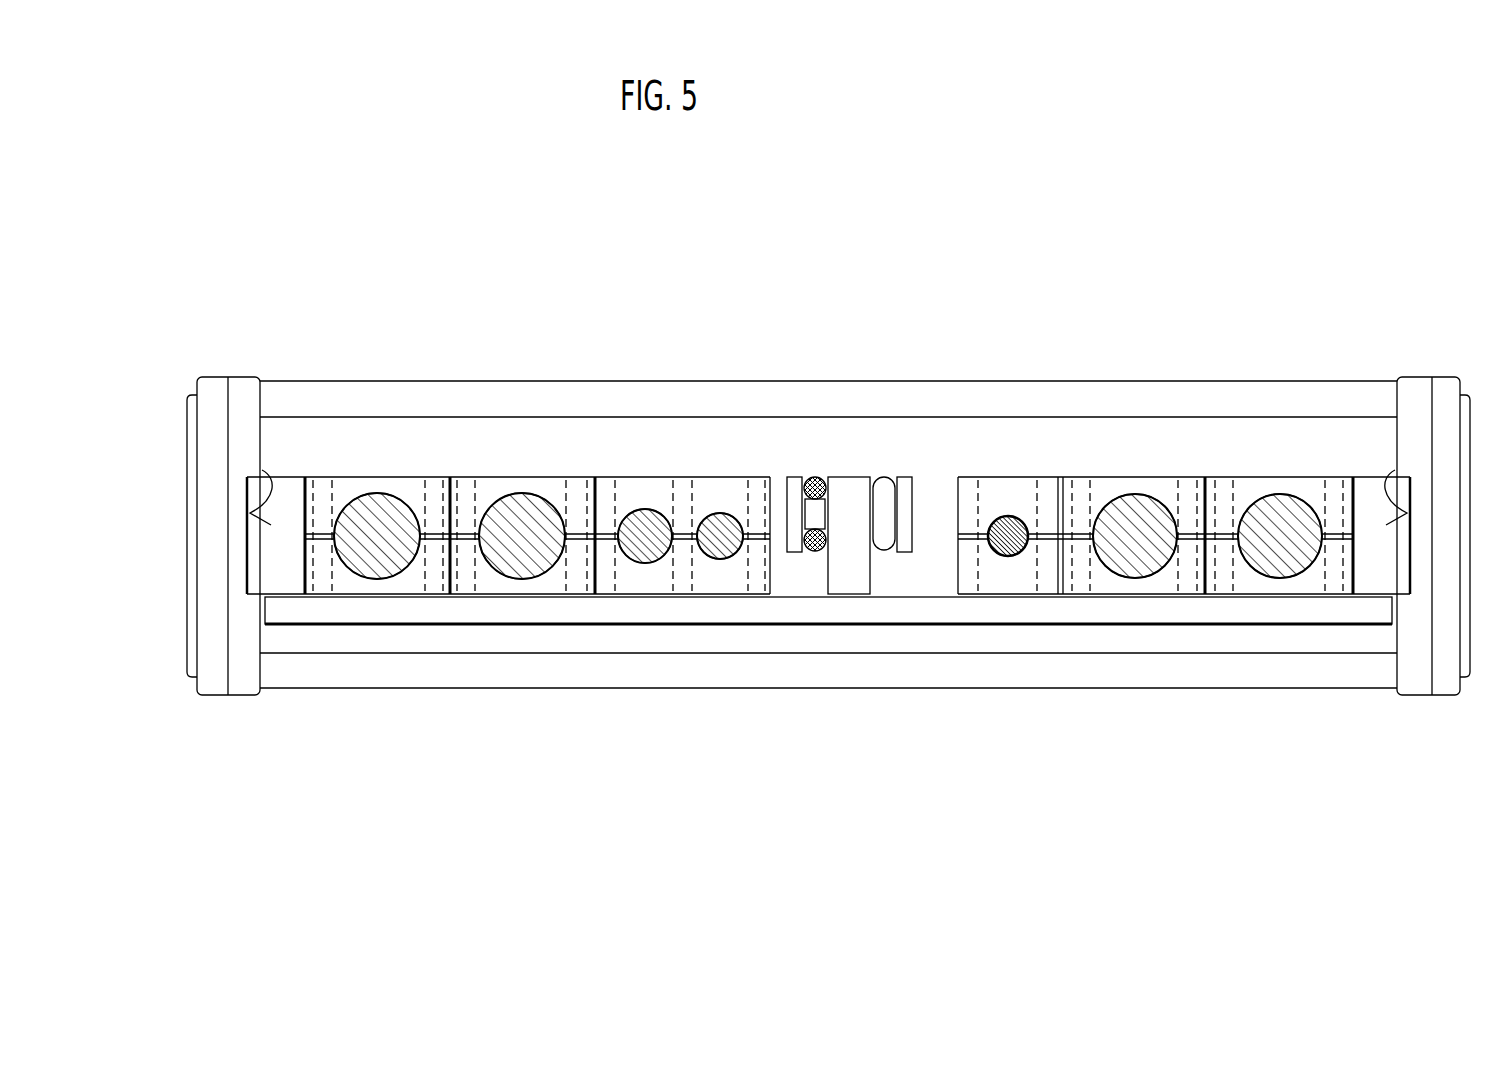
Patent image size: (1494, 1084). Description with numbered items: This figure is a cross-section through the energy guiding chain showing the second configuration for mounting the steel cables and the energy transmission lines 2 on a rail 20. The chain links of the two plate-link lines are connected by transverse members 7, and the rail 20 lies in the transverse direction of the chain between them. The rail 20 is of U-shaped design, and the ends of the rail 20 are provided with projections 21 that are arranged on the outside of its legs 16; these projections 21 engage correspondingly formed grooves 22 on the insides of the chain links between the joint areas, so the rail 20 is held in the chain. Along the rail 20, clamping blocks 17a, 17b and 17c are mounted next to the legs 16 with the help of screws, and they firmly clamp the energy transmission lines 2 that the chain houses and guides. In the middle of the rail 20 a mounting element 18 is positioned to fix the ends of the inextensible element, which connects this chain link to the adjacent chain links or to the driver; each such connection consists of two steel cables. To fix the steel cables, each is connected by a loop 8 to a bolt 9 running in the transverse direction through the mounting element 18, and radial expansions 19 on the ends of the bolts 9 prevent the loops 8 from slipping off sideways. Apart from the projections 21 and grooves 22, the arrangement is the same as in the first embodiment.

The energy transmission lines 2 is at (643, 535).
The transverse members 7 is at (395, 402).
The loop 8 is at (815, 477).
The bolts 9 is at (815, 517).
The legs 16 is at (288, 517).
The clamping block 17a is at (533, 585).
The clamping block 17b is at (665, 583).
The clamping block 17c is at (1012, 582).
The mounting element 18 is at (850, 548).
The radial expansions 19 is at (788, 497).
The rail 20 is at (912, 657).
The projections 21 is at (253, 553).
The grooves 22 is at (262, 470).